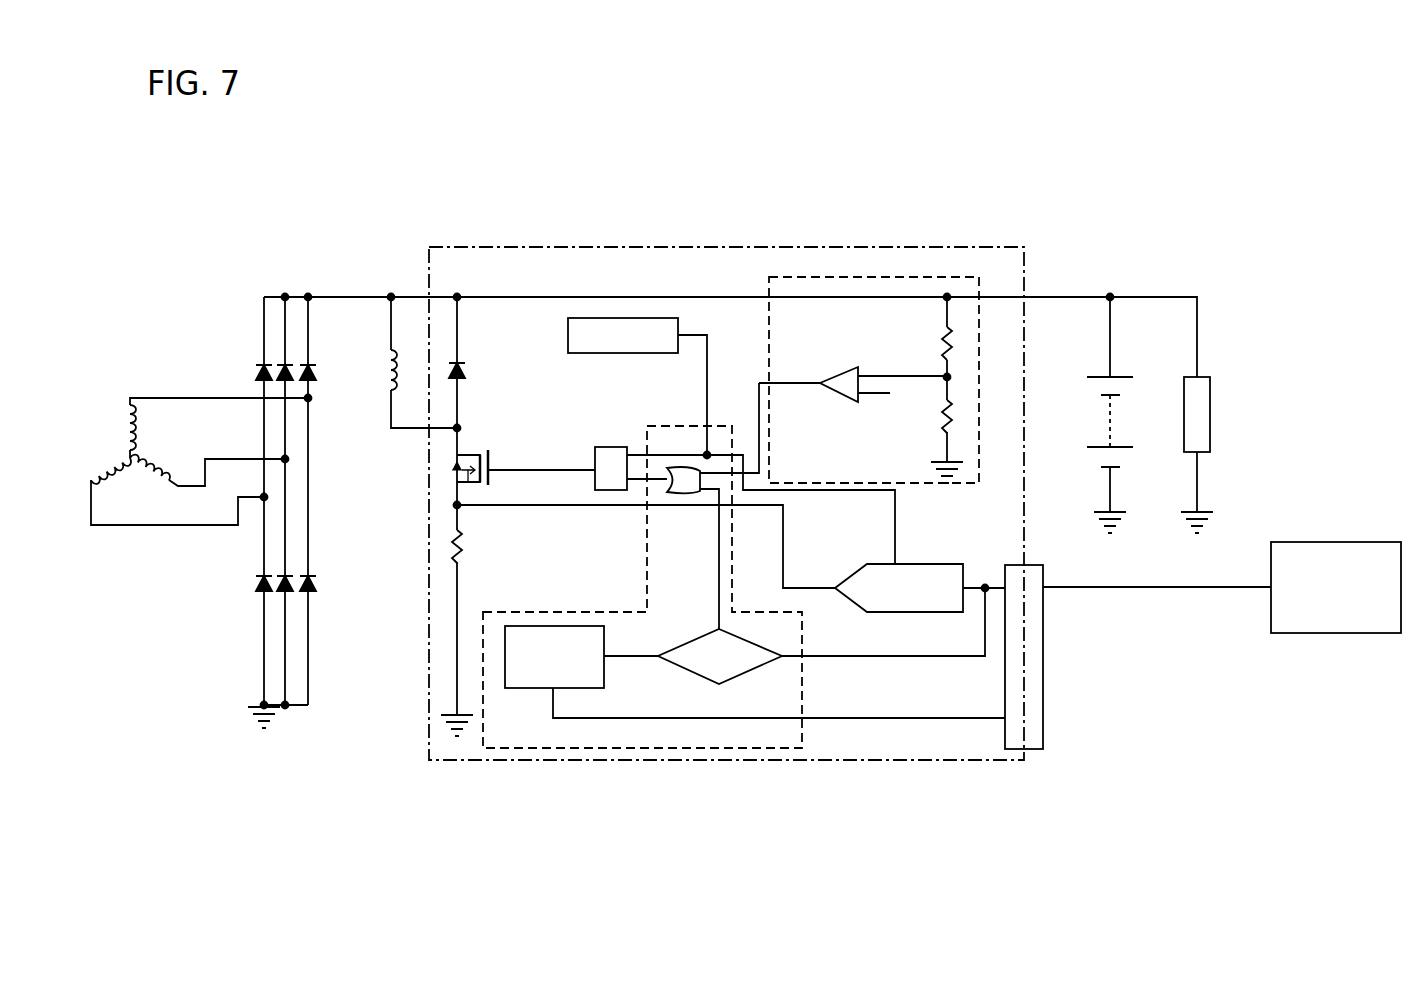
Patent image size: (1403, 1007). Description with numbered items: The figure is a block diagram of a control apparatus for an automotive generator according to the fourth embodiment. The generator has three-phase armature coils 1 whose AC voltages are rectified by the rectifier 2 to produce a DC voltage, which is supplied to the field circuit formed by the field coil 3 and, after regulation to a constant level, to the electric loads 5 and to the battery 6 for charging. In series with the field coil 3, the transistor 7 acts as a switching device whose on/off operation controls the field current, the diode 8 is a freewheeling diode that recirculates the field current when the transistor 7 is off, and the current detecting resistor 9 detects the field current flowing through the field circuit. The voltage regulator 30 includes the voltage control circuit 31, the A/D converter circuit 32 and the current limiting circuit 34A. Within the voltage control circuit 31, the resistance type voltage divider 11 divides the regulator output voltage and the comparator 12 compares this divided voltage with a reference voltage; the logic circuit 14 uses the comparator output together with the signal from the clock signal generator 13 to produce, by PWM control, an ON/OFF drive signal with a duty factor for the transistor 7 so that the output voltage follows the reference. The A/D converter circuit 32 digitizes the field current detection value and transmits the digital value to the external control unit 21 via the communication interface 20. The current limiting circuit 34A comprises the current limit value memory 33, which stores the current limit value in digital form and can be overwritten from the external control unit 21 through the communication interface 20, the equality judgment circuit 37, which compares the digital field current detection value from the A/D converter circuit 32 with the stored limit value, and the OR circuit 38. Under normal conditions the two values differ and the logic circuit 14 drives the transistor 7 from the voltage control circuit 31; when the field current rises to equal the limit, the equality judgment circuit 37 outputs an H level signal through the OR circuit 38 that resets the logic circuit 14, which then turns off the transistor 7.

The three-phase armature coils 1 is at (121, 397).
The rectifier 2 is at (274, 512).
The field coil 3 is at (383, 373).
The electric loads 5 is at (1203, 372).
The battery 6 is at (1118, 370).
The transistor 7 is at (452, 468).
The diode 8 is at (465, 368).
The current detecting resistor 9 is at (450, 548).
The resistance type voltage divider 11 is at (940, 348).
The comparator 12 is at (831, 370).
The clock signal generator 13 is at (600, 354).
The logic circuit 14 is at (613, 447).
The communication interface 20 is at (1044, 686).
The external control unit 21 is at (1323, 542).
The voltage regulator 30 is at (565, 247).
The voltage control circuit 31 is at (880, 277).
The A/D converter circuit 32 is at (917, 564).
The current limit value memory 33 is at (523, 689).
The current limiting circuit 34A is at (803, 702).
The equality judgment circuit 37 is at (684, 672).
The OR circuit 38 is at (683, 494).